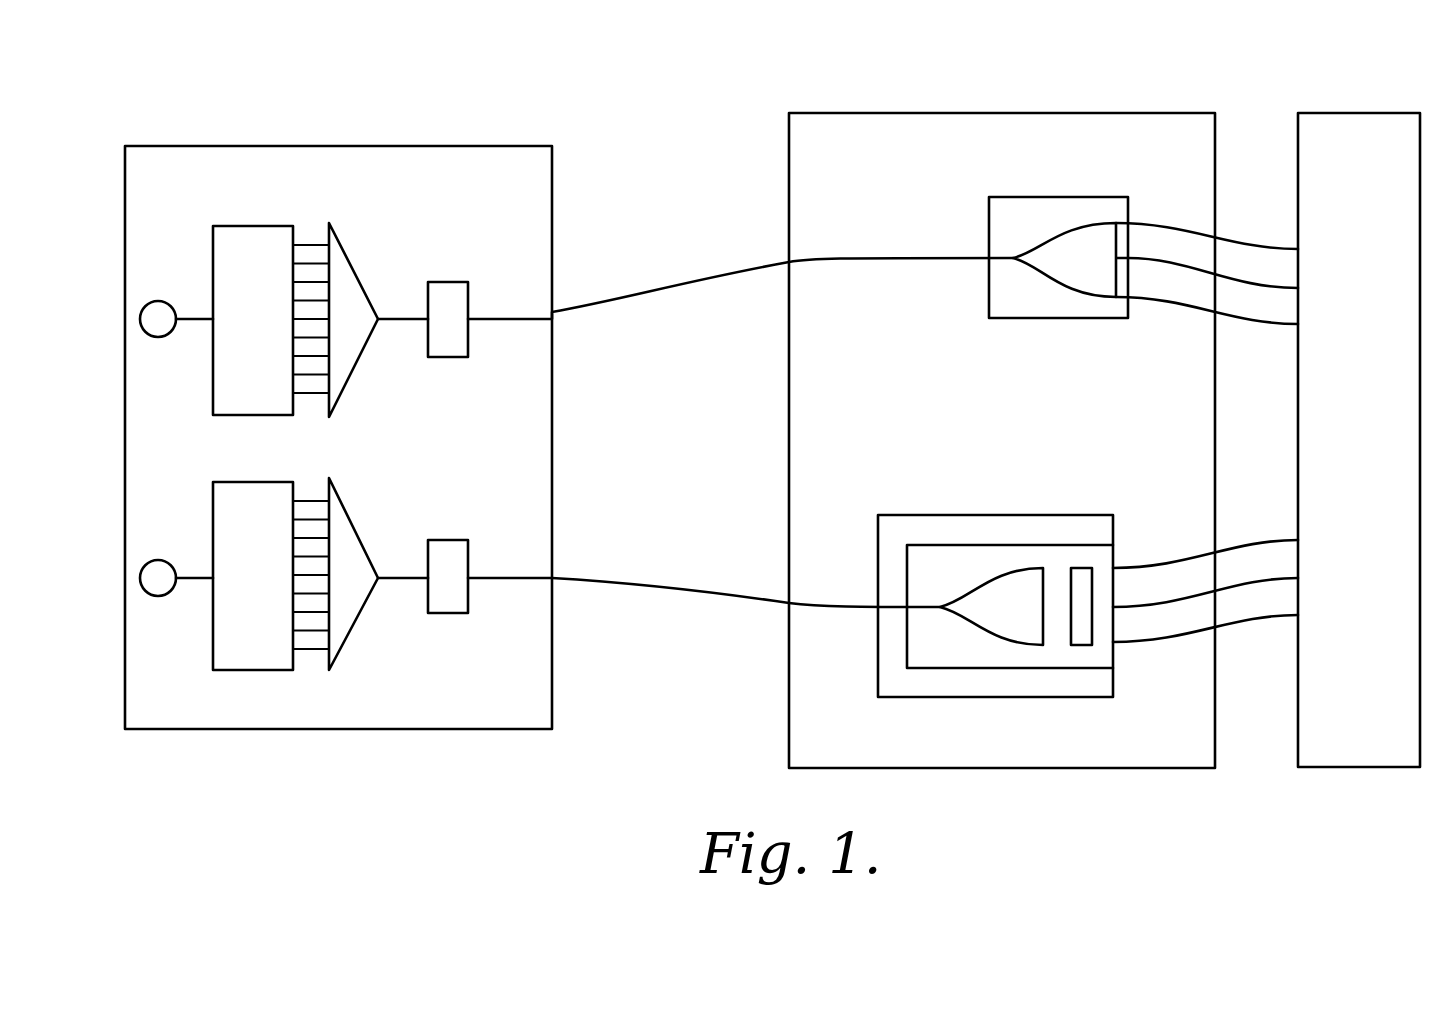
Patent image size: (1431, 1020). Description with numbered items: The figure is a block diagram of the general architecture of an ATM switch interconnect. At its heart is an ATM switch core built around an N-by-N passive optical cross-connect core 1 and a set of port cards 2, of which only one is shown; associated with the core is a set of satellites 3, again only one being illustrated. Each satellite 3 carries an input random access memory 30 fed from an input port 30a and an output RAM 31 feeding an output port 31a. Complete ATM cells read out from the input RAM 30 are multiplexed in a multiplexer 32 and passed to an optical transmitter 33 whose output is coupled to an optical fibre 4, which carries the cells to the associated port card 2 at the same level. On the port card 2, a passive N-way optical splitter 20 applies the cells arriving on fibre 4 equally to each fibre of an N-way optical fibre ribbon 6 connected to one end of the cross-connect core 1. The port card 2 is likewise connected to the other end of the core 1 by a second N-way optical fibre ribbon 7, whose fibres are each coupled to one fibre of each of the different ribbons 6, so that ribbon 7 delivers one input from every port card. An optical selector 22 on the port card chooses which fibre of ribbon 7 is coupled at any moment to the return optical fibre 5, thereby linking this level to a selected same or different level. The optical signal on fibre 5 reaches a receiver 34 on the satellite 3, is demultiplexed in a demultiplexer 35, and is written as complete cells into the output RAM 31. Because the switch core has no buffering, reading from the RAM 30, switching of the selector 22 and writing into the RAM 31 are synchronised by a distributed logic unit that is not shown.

The passive optical cross-connect core 1 is at (1373, 143).
The port card 2 is at (910, 143).
The satellite 3 is at (267, 167).
The optical fibre 4 is at (712, 277).
The optical fibre 5 is at (618, 583).
The N-way optical fibre ribbon 6 is at (1174, 245).
The N-way optical fibre ribbon 7 is at (1167, 622).
The passive N-way optical splitter 20 is at (1048, 223).
The optical selector 22 is at (952, 645).
The input random access memory 30 is at (237, 265).
The input port 30a is at (157, 315).
The output RAM 31 is at (235, 517).
The output port 31a is at (158, 580).
The multiplexer 32 is at (347, 292).
The optical transmitter 33 is at (450, 308).
The receiver 34 is at (448, 552).
The demultiplexer 35 is at (347, 550).